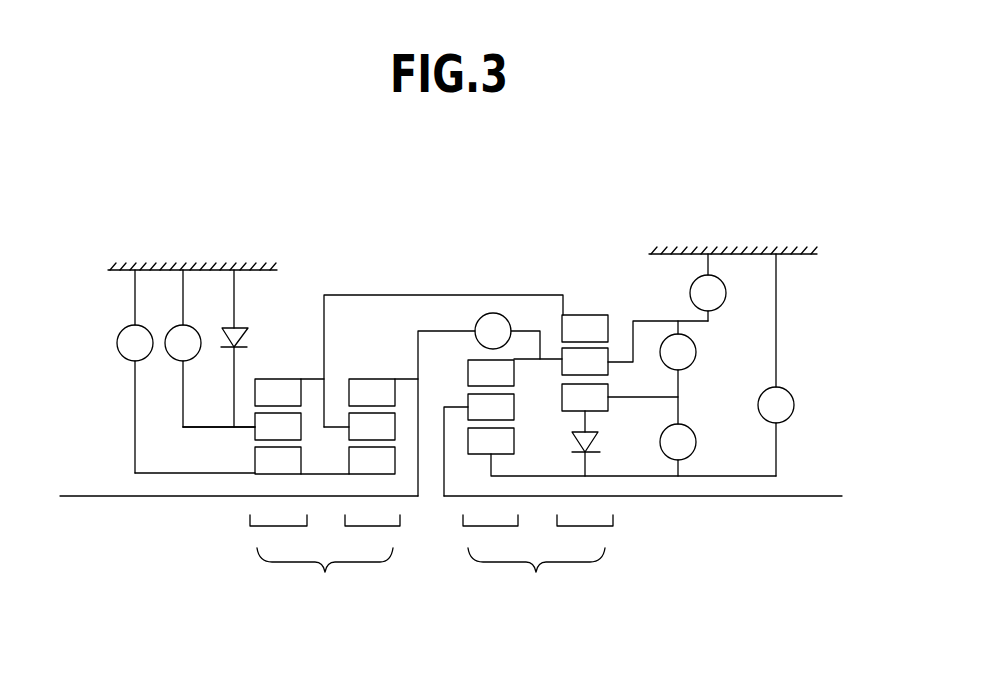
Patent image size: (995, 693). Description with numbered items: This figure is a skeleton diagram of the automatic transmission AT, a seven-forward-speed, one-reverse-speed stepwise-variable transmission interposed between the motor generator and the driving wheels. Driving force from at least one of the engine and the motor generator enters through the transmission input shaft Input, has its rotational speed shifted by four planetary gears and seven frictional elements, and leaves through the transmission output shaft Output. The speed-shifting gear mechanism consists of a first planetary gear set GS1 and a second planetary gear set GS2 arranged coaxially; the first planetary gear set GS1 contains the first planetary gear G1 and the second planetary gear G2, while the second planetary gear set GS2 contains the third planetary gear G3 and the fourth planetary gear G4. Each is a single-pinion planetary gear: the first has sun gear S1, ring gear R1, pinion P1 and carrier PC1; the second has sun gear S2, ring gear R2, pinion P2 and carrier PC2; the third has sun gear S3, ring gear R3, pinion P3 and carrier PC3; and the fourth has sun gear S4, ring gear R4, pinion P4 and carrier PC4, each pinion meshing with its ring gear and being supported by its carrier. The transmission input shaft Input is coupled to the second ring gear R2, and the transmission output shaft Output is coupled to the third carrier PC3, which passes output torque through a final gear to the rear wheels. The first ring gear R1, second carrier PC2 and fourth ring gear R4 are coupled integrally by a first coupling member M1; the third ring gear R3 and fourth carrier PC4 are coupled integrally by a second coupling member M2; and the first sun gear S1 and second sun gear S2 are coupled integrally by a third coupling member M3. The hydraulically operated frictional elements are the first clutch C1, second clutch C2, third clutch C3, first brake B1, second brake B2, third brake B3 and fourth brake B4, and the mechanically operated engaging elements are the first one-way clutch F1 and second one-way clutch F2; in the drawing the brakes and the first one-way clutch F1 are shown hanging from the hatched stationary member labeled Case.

The automatic transmission AT is at (472, 163).
The transmission case Case is at (148, 270).
The transmission input shaft Input is at (110, 496).
The transmission output shaft Output is at (713, 496).
The first brake B1 is at (210, 348).
The second brake B2 is at (776, 365).
The third brake B3 is at (186, 371).
The fourth brake B4 is at (708, 287).
The first clutch C1 is at (479, 404).
The second clutch C2 is at (678, 372).
The third clutch C3 is at (678, 450).
The first one-way clutch F1 is at (249, 320).
The second one-way clutch F2 is at (603, 447).
The first ring gear R1 is at (289, 392).
The first pinion P1 is at (278, 426).
The first sun gear S1 is at (278, 460).
The first carrier PC1 is at (245, 427).
The second ring gear R2 is at (383, 392).
The second pinion P2 is at (372, 426).
The second sun gear S2 is at (372, 460).
The second carrier PC2 is at (337, 427).
The third ring gear R3 is at (491, 373).
The third pinion P3 is at (491, 407).
The third sun gear S3 is at (622, 452).
The third carrier PC3 is at (451, 407).
The fourth ring gear R4 is at (585, 328).
The fourth pinion P4 is at (585, 361).
The fourth sun gear S4 is at (620, 397).
The fourth carrier PC4 is at (614, 363).
The first coupling member M1 is at (453, 295).
The second coupling member M2 is at (527, 361).
The third coupling member M3 is at (320, 475).
The first planetary gear G1 is at (278, 535).
The second planetary gear G2 is at (372, 535).
The third planetary gear G3 is at (490, 535).
The fourth planetary gear G4 is at (585, 535).
The first planetary gear set GS1 is at (325, 574).
The second planetary gear set GS2 is at (536, 574).